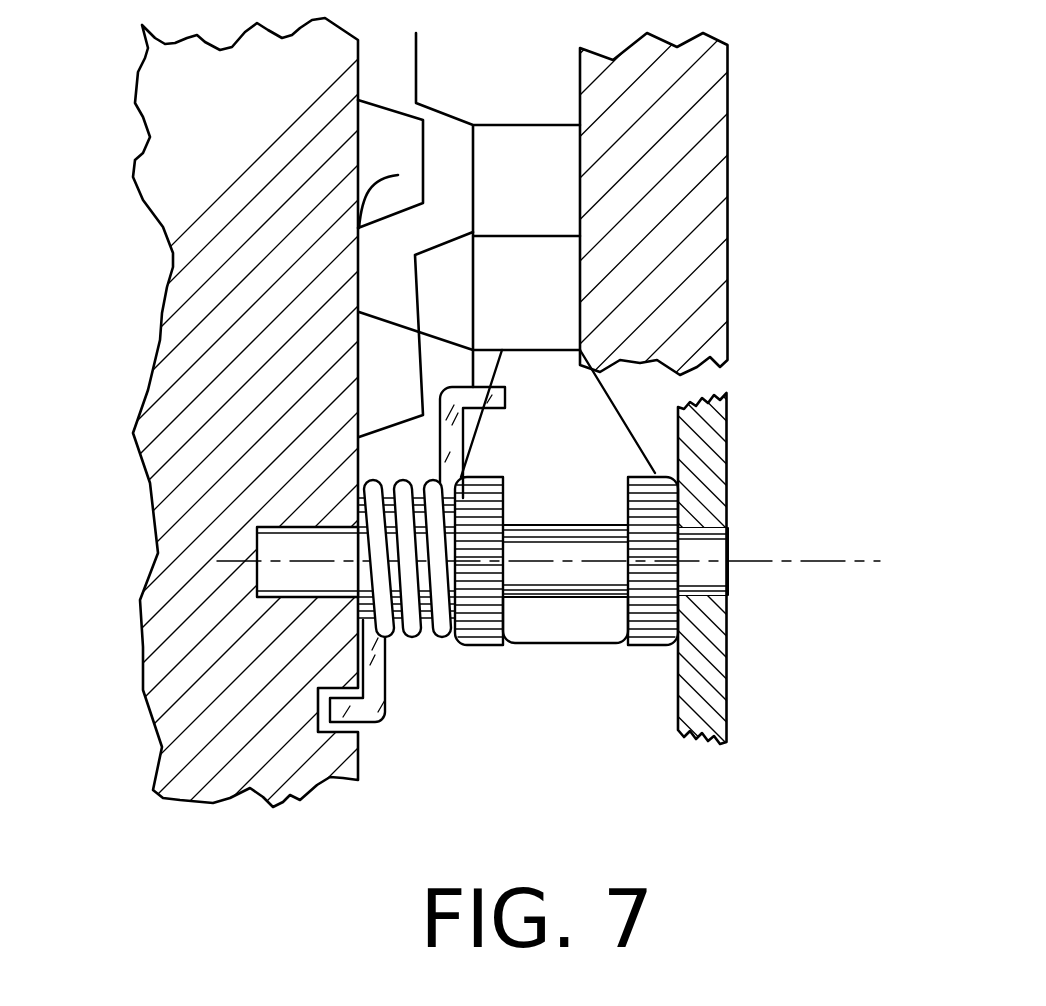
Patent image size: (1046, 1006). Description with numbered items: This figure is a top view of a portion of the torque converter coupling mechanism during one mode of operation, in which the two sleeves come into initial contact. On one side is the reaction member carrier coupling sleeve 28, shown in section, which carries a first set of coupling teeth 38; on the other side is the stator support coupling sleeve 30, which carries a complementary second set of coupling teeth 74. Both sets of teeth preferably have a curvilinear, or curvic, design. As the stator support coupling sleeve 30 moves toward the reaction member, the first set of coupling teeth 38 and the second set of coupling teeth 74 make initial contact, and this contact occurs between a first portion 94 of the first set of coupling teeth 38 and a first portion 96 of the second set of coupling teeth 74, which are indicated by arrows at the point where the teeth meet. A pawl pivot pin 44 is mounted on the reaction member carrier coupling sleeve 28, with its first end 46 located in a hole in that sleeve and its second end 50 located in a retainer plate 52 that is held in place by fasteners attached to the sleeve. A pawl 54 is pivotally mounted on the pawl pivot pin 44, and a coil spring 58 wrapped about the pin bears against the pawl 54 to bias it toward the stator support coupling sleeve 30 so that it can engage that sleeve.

The reaction member carrier coupling sleeve 28 is at (223, 660).
The stator support coupling sleeve 30 is at (682, 278).
The first set of coupling teeth 38 is at (377, 330).
The pawl pivot pin 44 is at (562, 593).
The first end of the pawl pivot pin 46 is at (280, 552).
The second end of the pawl pivot pin 50 is at (710, 552).
The retainer plate 52 is at (710, 643).
The pawl 54 is at (577, 453).
The coil spring 58 is at (410, 623).
The second set of coupling teeth 74 is at (548, 280).
The first portion of the first set of coupling teeth 94 is at (413, 333).
The first portion of the second set of coupling teeth 96 is at (422, 322).